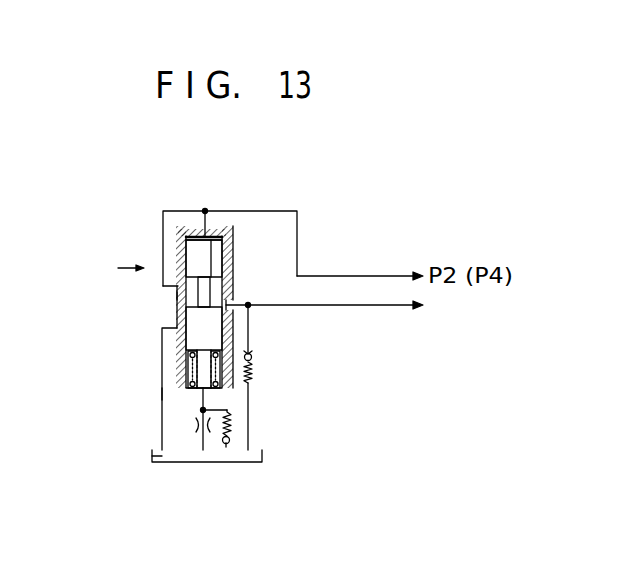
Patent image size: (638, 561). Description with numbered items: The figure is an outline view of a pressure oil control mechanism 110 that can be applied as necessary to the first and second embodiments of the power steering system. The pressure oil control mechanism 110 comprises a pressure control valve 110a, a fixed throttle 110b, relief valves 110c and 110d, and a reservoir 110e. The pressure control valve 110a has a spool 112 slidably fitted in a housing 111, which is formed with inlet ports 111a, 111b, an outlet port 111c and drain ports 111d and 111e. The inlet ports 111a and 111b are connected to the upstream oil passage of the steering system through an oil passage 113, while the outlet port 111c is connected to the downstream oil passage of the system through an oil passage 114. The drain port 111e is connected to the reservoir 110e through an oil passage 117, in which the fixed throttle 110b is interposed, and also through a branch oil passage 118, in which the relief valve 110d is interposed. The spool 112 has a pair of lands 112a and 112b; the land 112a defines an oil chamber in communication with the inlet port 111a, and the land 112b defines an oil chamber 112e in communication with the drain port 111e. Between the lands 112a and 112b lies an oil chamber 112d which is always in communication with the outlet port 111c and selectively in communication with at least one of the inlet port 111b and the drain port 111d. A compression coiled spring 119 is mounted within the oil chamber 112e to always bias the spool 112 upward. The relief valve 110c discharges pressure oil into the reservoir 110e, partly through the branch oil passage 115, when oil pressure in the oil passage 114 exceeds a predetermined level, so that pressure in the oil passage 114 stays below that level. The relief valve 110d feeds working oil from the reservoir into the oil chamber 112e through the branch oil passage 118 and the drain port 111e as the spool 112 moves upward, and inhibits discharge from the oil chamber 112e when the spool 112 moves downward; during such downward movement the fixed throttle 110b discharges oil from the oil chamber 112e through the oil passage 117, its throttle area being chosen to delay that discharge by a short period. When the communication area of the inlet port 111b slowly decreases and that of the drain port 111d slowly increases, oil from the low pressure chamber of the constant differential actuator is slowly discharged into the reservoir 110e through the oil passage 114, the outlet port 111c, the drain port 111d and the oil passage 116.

The pressure oil control mechanism 110 is at (223, 164).
The pressure control valve 110a is at (107, 267).
The fixed throttle 110b is at (196, 423).
The relief valve 110c is at (253, 372).
The relief valve 110d is at (227, 446).
The reservoir 110e is at (151, 462).
The housing 111 is at (185, 303).
The inlet port 111a is at (215, 238).
The inlet port 111b is at (176, 296).
The outlet port 111c is at (228, 300).
The drain port 111d is at (190, 355).
The drain port 111e is at (212, 390).
The spool 112 is at (189, 233).
The land 112a is at (186, 250).
The land 112b is at (213, 326).
The oil chamber 112d is at (179, 329).
The oil chamber 112e is at (190, 392).
The oil passage 113 is at (242, 211).
The oil passage 114 is at (366, 306).
The branch oil passage 115 is at (251, 349).
The oil passage 116 is at (162, 395).
The oil passage 117 is at (205, 448).
The branch oil passage 118 is at (229, 415).
The compression coiled spring 119 is at (197, 372).